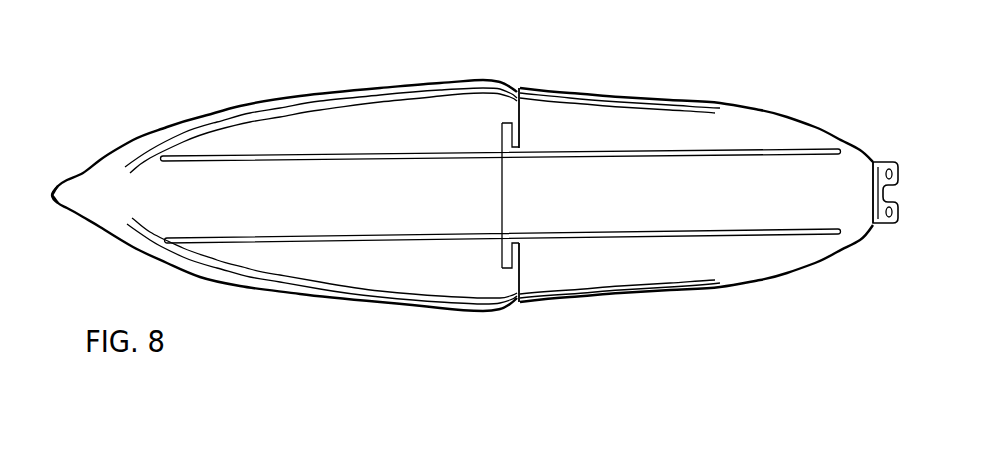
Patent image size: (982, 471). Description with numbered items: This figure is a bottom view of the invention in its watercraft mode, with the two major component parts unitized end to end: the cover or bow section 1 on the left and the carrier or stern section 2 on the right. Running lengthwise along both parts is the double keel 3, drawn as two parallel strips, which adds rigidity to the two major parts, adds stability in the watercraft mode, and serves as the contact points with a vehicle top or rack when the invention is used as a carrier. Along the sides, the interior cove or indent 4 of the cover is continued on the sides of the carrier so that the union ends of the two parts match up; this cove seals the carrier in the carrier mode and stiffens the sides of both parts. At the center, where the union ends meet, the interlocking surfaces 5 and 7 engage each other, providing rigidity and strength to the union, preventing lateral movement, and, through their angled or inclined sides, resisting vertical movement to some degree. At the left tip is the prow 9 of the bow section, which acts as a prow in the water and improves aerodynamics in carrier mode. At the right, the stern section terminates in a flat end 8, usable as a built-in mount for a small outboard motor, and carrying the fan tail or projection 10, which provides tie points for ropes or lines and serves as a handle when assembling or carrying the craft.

The cover or bow section 1 is at (377, 211).
The carrier or stern section 2 is at (662, 210).
The double keel 3 is at (266, 236).
The interior cove or indent 4 is at (417, 90).
The interlocking surface 5 is at (517, 110).
The interlocking surface 7 is at (522, 144).
The flat end 8 is at (878, 222).
The prow 9 is at (53, 191).
The fan tail or projection 10 is at (886, 161).